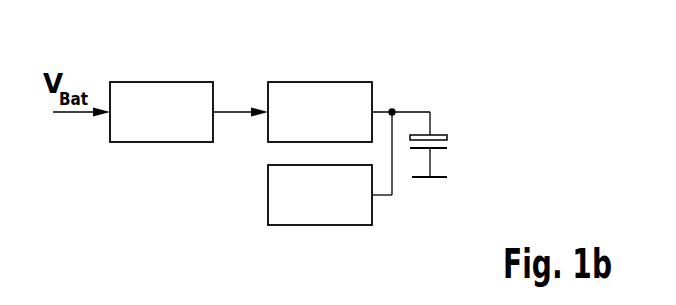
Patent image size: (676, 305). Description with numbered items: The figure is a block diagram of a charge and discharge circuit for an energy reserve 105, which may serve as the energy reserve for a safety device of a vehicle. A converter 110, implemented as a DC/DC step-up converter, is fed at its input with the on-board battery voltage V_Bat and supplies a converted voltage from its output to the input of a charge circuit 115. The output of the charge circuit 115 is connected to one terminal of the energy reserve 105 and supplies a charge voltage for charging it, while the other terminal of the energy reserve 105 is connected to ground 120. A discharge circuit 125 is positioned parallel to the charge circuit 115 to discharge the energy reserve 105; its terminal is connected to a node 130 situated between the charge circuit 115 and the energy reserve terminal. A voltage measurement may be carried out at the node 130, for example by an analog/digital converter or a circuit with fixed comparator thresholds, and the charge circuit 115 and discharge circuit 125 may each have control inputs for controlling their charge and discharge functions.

The energy reserve 105 is at (447, 143).
The converter 110 is at (162, 82).
The charge circuit 115 is at (320, 82).
The ground 120 is at (417, 180).
The discharge circuit 125 is at (320, 226).
The node 130 is at (392, 108).